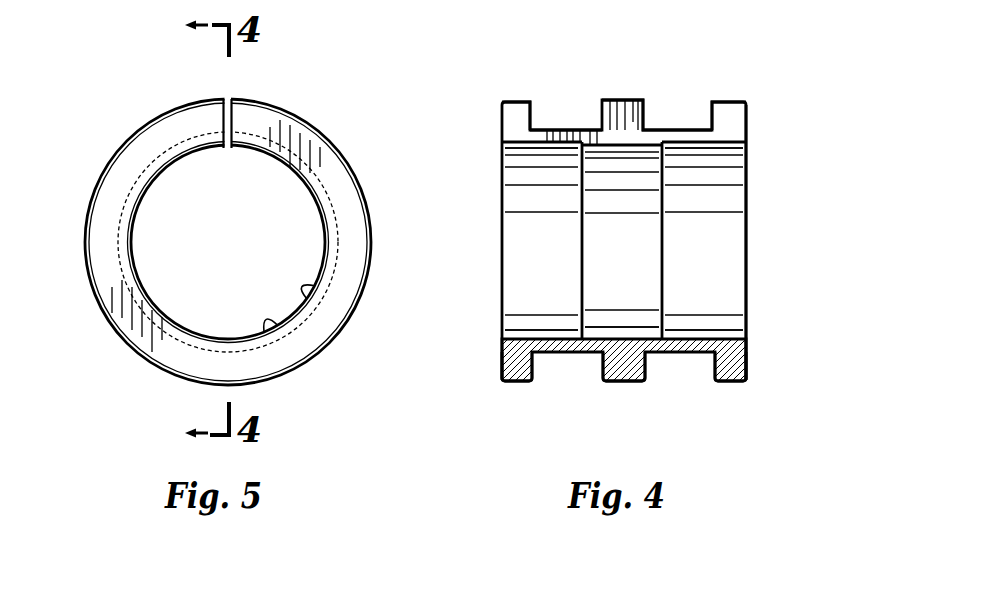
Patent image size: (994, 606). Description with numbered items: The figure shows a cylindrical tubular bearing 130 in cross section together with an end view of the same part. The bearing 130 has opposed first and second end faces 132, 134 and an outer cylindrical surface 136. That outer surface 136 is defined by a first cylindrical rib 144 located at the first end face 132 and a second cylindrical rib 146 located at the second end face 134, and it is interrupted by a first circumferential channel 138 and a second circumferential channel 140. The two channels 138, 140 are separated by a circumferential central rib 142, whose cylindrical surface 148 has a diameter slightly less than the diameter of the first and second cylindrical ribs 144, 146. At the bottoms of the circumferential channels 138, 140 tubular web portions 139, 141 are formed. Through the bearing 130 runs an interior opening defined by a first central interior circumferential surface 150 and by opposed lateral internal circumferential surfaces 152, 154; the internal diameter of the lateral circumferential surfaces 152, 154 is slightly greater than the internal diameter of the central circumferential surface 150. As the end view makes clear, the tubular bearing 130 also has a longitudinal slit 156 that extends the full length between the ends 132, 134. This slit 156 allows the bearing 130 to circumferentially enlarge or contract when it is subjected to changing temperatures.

In FIG. 5, the bearing 130 is at (128, 127).
In FIG. 4, the bearing 130 is at (753, 89).
In FIG. 5, the first end face 132 is at (145, 332).
In FIG. 4, the first end face 132 is at (501, 242).
In FIG. 4, the second end face 134 is at (746, 158).
In FIG. 5, the outer cylindrical surface 136 is at (295, 118).
In FIG. 4, the outer cylindrical surface 136 is at (516, 101).
In FIG. 4, the first circumferential channel 138 is at (672, 128).
In FIG. 4, the tubular web portion 139 is at (688, 137).
In FIG. 4, the second circumferential channel 140 is at (558, 130).
In FIG. 4, the tubular web portion 141 is at (551, 142).
In FIG. 4, the circumferential central rib 142 is at (617, 381).
In FIG. 4, the first cylindrical rib 144 is at (520, 381).
In FIG. 4, the second cylindrical rib 146 is at (741, 382).
In FIG. 4, the cylindrical surface 148 is at (627, 381).
In FIG. 5, the first central interior circumferential surface 150 is at (302, 288).
In FIG. 4, the first central interior circumferential surface 150 is at (632, 335).
In FIG. 5, the lateral internal circumferential surface 152 is at (269, 325).
In FIG. 4, the lateral internal circumferential surface 152 is at (538, 336).
In FIG. 4, the lateral internal circumferential surface 154 is at (715, 340).
In FIG. 5, the longitudinal slit 156 is at (226, 98).